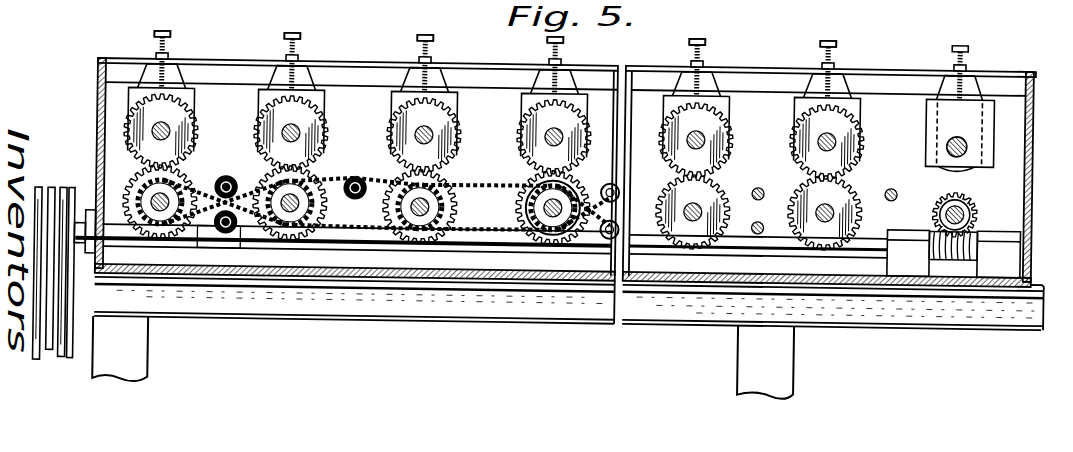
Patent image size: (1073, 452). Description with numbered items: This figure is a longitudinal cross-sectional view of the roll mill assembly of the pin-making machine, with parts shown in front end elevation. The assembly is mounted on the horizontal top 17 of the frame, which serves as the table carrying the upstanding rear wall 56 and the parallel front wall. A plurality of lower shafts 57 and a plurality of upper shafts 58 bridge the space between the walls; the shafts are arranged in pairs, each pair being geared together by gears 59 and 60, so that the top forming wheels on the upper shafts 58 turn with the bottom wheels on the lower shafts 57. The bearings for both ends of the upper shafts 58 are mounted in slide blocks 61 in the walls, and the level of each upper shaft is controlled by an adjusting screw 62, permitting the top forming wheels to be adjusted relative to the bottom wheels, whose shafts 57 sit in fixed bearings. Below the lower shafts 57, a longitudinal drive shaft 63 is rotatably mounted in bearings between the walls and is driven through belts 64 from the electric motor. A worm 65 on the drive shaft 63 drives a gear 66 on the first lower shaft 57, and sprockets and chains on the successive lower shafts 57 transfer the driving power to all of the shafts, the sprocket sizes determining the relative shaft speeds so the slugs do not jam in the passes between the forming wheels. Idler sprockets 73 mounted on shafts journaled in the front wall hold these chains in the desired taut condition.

The horizontal top 17 is at (697, 299).
The rear wall 56 is at (480, 90).
The lower shaft 57 is at (692, 194).
The upper shaft 58 is at (705, 135).
The gear 59 is at (523, 198).
The gear 60 is at (532, 134).
The slide block 61 is at (393, 98).
The adjusting screw 62 is at (290, 46).
The longitudinal drive shaft 63 is at (503, 234).
The belt 64 is at (65, 188).
The worm 65 is at (957, 248).
The gear 66 is at (978, 206).
The idler sprocket 73 is at (228, 172).